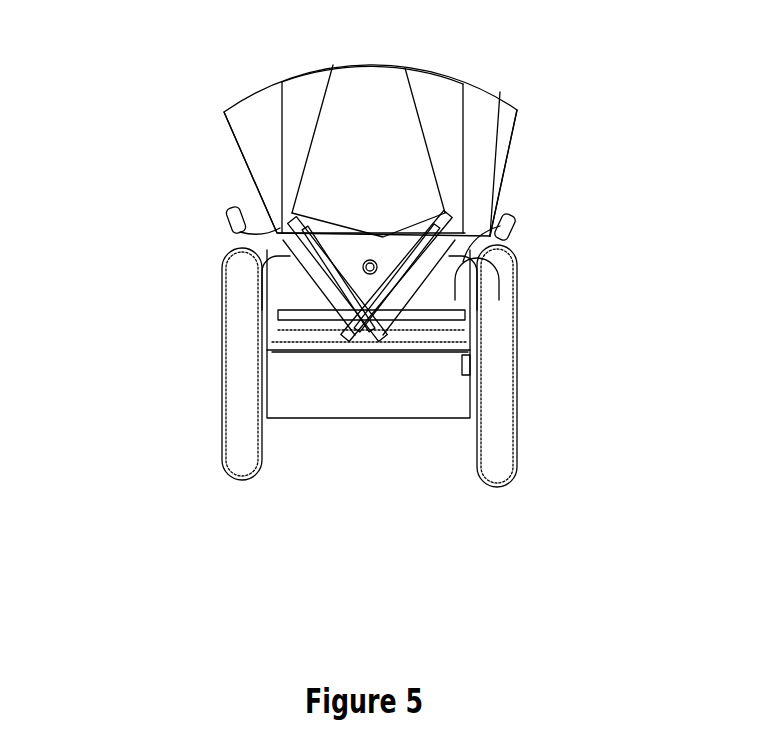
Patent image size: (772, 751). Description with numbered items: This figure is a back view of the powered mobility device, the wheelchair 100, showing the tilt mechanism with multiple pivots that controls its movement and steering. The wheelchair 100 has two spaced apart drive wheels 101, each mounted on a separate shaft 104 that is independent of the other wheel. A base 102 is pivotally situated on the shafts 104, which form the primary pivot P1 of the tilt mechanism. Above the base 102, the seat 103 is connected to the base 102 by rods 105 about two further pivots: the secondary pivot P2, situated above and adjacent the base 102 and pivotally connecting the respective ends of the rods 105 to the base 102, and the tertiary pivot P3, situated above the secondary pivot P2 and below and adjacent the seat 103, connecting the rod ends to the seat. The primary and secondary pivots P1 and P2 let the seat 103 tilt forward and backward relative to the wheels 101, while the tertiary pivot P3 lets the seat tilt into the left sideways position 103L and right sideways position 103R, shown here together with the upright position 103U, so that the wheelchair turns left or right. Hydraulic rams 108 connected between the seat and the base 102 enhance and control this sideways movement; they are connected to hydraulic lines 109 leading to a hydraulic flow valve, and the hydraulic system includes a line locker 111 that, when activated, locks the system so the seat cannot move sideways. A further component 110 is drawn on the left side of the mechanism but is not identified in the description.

The wheelchair 100 is at (180, 170).
The drive wheels 101 is at (232, 457).
The base 102 is at (362, 412).
The seat 103 is at (440, 138).
The left sideways position 103L is at (247, 87).
The upright position 103U is at (327, 68).
The right sideways position 103R is at (505, 87).
The shaft 104 is at (475, 370).
The rods 105 is at (310, 318).
The hydraulic rams 108 is at (305, 293).
The hydraulic lines 109 is at (275, 248).
The left knob 110 is at (230, 223).
The line locker 111 is at (508, 230).
The primary pivot P1 is at (262, 370).
The secondary pivot P2 is at (290, 345).
The tertiary pivot P3 is at (380, 258).